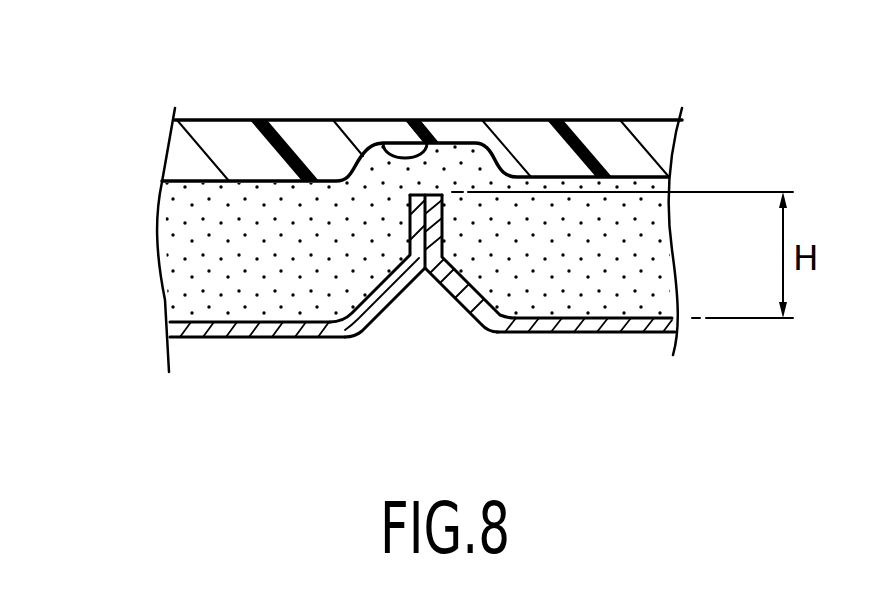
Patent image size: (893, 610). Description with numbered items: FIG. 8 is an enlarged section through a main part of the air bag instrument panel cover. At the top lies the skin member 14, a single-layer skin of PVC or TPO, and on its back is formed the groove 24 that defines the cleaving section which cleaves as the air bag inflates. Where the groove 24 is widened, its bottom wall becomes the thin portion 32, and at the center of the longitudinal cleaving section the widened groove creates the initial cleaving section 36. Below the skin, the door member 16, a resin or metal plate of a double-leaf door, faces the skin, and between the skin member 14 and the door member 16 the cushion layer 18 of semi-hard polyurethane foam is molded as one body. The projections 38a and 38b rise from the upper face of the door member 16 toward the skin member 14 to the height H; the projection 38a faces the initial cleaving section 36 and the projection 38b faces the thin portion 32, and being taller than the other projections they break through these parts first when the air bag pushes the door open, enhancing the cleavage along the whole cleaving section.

The skin member 14 is at (604, 132).
The door member 16 is at (213, 339).
The cushion layer 18 is at (188, 260).
The groove 24 is at (384, 142).
The thin portion 32 is at (422, 131).
The initial cleaving section 36 is at (421, 116).
The projection 38a is at (410, 213).
The projection 38b is at (470, 263).